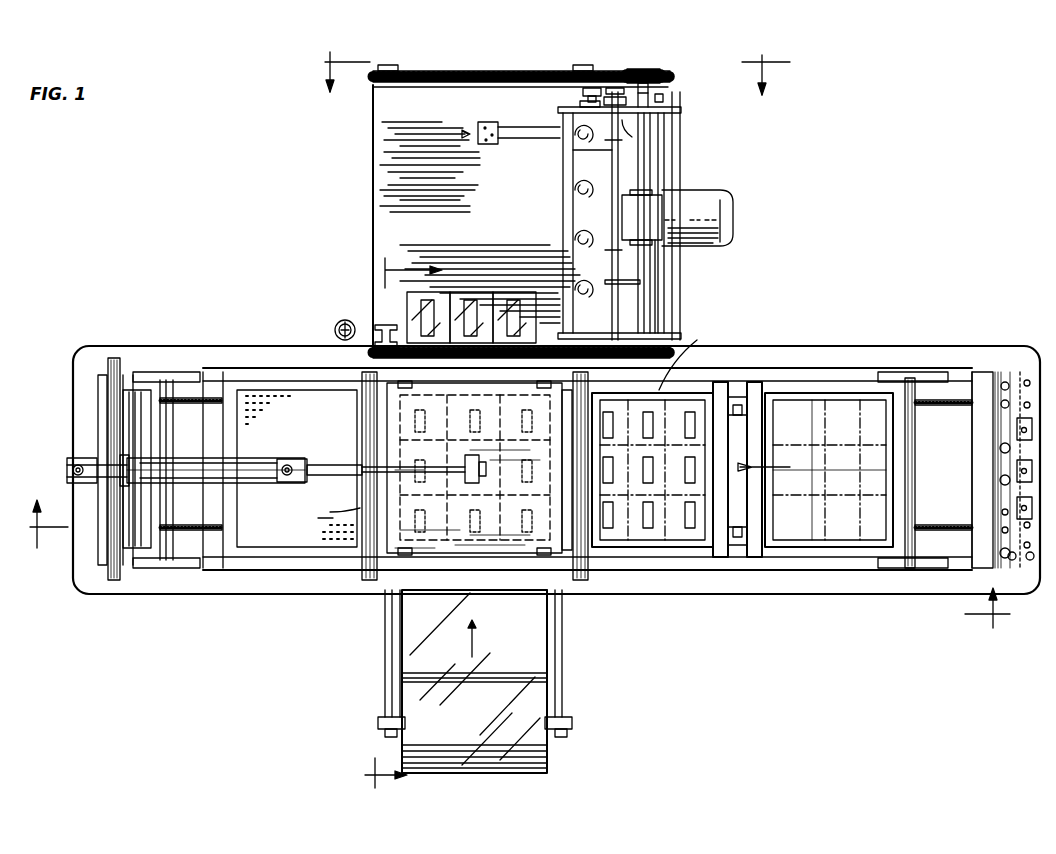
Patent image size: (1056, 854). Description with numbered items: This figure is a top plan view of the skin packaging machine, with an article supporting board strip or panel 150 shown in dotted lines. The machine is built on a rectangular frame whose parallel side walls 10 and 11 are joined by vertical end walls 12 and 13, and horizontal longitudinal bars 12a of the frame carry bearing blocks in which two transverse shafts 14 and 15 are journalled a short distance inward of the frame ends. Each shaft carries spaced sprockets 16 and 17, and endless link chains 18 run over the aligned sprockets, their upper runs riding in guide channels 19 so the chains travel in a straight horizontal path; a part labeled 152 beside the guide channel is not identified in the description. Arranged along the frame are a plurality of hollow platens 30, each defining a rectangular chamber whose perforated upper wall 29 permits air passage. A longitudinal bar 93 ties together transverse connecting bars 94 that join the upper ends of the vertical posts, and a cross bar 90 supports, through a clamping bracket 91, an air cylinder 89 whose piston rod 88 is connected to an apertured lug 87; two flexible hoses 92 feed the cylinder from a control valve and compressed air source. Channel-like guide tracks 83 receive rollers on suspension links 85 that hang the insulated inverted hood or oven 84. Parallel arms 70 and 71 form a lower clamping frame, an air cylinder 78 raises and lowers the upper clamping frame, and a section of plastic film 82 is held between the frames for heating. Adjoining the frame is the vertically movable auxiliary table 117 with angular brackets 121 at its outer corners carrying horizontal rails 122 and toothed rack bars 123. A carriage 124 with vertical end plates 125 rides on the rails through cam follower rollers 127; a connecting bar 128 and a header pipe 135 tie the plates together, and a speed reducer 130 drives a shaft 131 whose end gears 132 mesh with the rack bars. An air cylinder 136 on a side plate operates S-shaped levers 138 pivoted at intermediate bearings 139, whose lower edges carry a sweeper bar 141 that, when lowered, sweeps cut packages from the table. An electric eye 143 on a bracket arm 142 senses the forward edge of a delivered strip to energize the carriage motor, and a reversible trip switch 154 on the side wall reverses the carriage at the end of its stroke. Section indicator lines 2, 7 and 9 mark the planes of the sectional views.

The side wall 10 is at (308, 604).
The side wall 11 is at (295, 340).
The end wall 12 is at (72, 452).
The horizontal longitudinal bar 12a is at (156, 372).
The end wall 13 is at (1042, 362).
The horizontal transverse shaft 14 is at (170, 430).
The horizontal transverse shaft 15 is at (913, 440).
The sprocket 16 is at (206, 398).
The sprocket 17 is at (188, 526).
The endless link chain 18 is at (203, 403).
The upper metal guide channel 19 is at (736, 390).
The upper wall 29 is at (329, 436).
The hollow platen 30 is at (830, 390).
The arm 70 is at (385, 675).
The arm 71 is at (563, 675).
The air cylinder 78 is at (336, 331).
The plastic film 82 is at (540, 745).
The horizontal guide track 83 is at (260, 370).
The inverted hood 84 is at (499, 580).
The suspension link 85 is at (545, 390).
The apertured lug 87 is at (478, 442).
The piston rod 88 is at (338, 470).
The air cylinder 89 is at (272, 472).
The cross bar 90 is at (108, 404).
The clamping bracket 91 is at (94, 472).
The flexible air hose 92 is at (302, 472).
The longitudinal bar 93 is at (130, 365).
The transverse connecting bar 94 is at (572, 492).
The horizontal table 117 is at (373, 173).
The metal angular bracket 121 is at (388, 65).
The horizontal metal rail 122 is at (460, 80).
The toothed rack bar 123 is at (509, 80).
The metal carriage 124 is at (683, 131).
The end plate 125 is at (670, 107).
The cam follower with roller 127 is at (641, 69).
The connecting bar 128 is at (676, 173).
The speed reducer 130 is at (645, 215).
The driven horizontal shaft 131 is at (640, 272).
The gear 132 is at (658, 80).
The header pipe 135 is at (568, 222).
The air cylinder 136 is at (589, 97).
The S-shaped angular metal lever 138 is at (622, 157).
The intermediate bearing 139 is at (660, 312).
The sweeper bar 141 is at (610, 150).
The bracket arm 142 is at (517, 127).
The electric eye 143 is at (482, 120).
The board strip 150 is at (733, 553).
The coupling 152 is at (690, 353).
The reversible trip switch 154 is at (372, 325).
The section line 2 is at (518, 573).
The section line 7 is at (392, 524).
The section line 9 is at (555, 64).